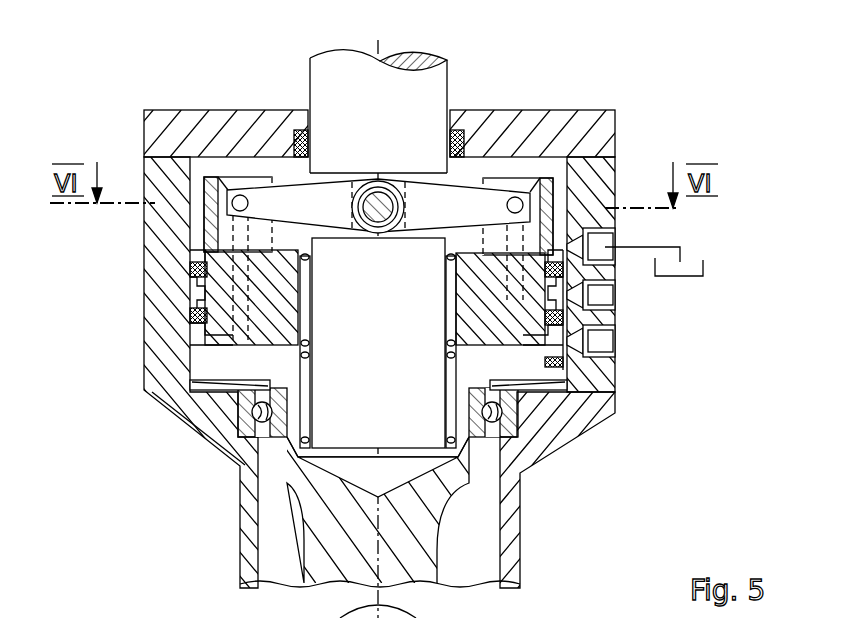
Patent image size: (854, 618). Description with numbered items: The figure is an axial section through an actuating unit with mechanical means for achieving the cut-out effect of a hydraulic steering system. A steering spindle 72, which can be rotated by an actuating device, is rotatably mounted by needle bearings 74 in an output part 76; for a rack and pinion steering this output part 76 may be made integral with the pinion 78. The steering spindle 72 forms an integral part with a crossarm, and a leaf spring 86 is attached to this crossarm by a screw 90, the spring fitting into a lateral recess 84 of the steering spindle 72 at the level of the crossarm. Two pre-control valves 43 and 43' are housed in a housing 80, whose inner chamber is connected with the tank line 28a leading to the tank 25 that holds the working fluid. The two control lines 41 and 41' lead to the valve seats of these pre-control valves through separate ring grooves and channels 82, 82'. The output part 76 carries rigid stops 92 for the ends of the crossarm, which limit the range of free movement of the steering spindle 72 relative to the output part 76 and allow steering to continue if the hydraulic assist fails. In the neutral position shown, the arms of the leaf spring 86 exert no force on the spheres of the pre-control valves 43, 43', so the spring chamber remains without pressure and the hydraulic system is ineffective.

The tank 25 is at (703, 268).
The tank line 28a is at (668, 246).
The control line 41 is at (672, 366).
The control line 41' is at (675, 312).
The pre-control valve 43 is at (180, 174).
The pre-control valve 43' is at (584, 154).
The steering spindle 72 is at (428, 88).
The needle bearings 74 is at (307, 383).
The output part 76 is at (277, 333).
The pinion 78 is at (427, 567).
The housing 80 is at (572, 412).
The ring groove and channel 82 is at (142, 292).
The ring groove and channel 82' is at (664, 259).
The lateral recess 84 is at (296, 182).
The leaf spring 86 is at (447, 205).
The screw 90 is at (375, 208).
The rigid stops 92 is at (580, 275).